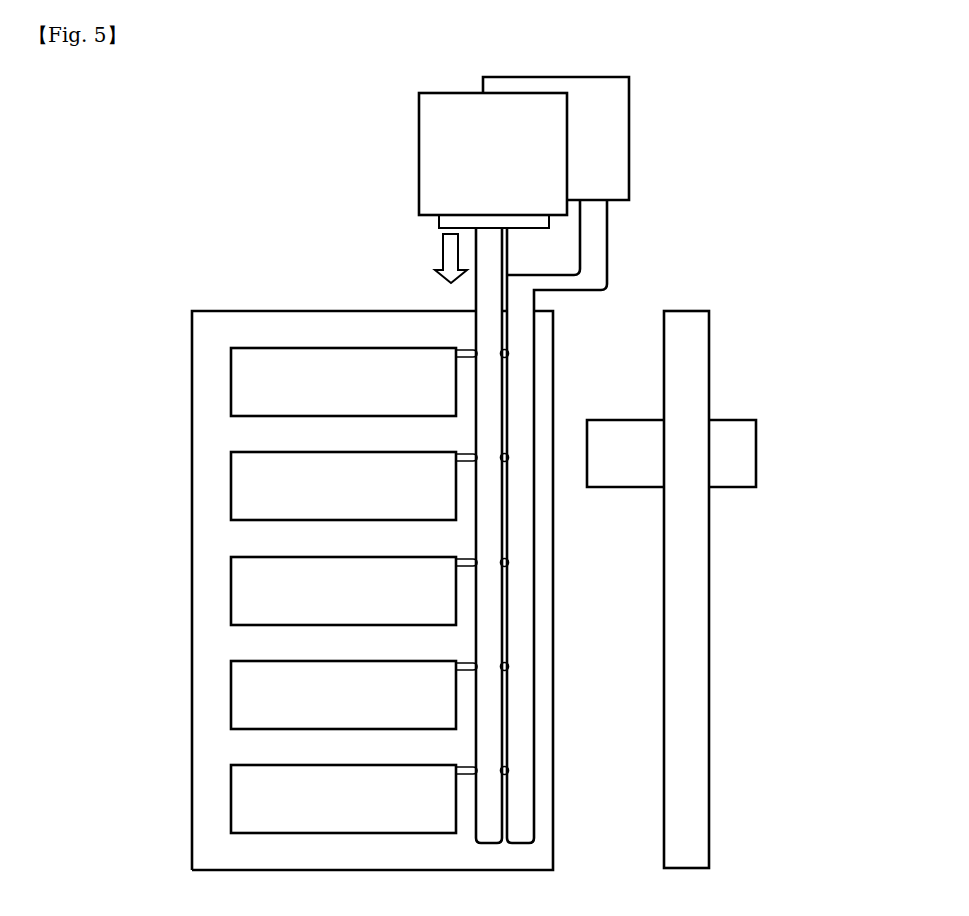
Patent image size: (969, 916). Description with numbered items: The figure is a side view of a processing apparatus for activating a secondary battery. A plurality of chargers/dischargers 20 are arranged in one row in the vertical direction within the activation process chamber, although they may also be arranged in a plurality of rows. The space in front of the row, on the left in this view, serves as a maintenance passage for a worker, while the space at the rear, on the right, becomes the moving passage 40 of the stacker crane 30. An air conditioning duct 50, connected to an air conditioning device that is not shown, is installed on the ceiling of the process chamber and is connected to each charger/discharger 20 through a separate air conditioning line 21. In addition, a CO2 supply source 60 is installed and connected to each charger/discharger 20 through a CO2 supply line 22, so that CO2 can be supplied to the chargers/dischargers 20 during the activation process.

The chargers/dischargers 20 is at (273, 386).
The air conditioning line 21 is at (476, 292).
The CO2 supply line 22 is at (606, 238).
The stacker crane 30 is at (756, 455).
The moving passage 40 is at (738, 803).
The air conditioning duct 50 is at (419, 154).
The CO2 supply source 60 is at (630, 138).